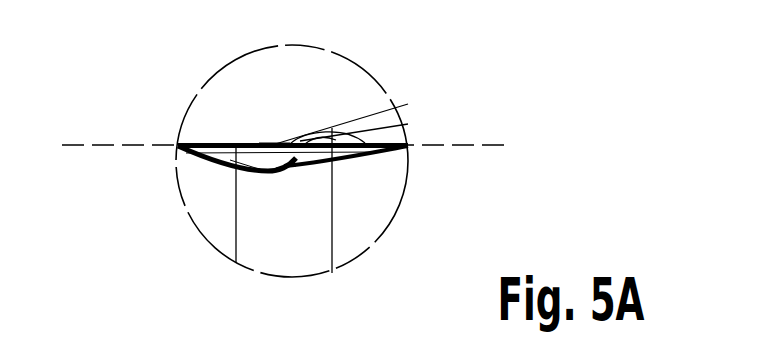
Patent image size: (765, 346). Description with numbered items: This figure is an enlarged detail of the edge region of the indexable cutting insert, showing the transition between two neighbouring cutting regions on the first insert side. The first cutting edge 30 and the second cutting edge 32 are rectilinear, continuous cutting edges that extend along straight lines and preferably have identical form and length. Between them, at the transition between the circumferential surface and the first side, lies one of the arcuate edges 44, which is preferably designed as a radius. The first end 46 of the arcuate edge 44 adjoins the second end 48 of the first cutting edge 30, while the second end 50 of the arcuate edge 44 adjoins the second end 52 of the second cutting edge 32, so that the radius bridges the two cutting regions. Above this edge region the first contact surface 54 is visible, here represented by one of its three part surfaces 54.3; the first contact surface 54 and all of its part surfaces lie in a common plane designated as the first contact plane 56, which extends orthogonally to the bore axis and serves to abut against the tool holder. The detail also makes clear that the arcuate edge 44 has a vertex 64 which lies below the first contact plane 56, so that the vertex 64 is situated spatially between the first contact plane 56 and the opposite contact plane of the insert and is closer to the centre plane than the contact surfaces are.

The first cutting edge 30 is at (178, 143).
The second cutting edge 32 is at (370, 145).
The arcuate edge 44 is at (238, 156).
The first end of the arcuate edge 46 is at (202, 131).
The second end of the first cutting edge 48 is at (237, 145).
The second end of the arcuate edge 50 is at (373, 136).
The second end of the second cutting edge 52 is at (330, 145).
The first contact surface 54 is at (290, 72).
The first part surface 54.3 is at (260, 145).
The first contact plane 56 is at (93, 145).
The vertex 64 is at (283, 162).